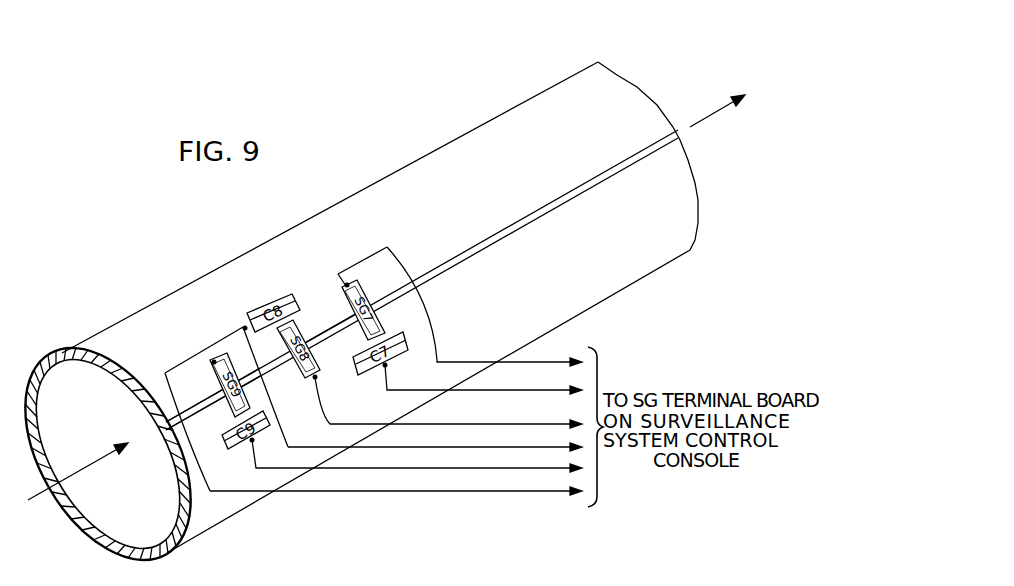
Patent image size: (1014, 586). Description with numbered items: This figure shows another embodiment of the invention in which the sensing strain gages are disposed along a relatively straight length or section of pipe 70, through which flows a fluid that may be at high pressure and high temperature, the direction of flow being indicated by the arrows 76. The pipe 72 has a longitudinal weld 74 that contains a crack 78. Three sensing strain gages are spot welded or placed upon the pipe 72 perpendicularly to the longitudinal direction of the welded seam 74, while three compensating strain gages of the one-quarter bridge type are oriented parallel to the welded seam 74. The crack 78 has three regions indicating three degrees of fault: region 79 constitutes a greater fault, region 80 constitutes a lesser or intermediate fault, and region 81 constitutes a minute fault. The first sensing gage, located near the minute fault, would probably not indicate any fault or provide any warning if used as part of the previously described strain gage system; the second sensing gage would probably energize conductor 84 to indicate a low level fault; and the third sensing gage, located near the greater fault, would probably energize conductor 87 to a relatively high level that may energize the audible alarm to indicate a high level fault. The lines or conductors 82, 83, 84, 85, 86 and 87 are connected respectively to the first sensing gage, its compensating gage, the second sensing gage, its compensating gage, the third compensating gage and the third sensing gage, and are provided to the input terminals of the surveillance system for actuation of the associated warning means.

The pipe 70 is at (408, 133).
The pipe 72 is at (130, 318).
The longitudinal weld 74 is at (539, 213).
The arrows 76 is at (702, 119).
The crack 78 is at (243, 340).
The region 79 is at (195, 404).
The region 80 is at (264, 379).
The region 81 is at (333, 330).
The conductor 82 is at (522, 362).
The conductor 83 is at (522, 390).
The conductor 84 is at (522, 424).
The conductor 85 is at (522, 447).
The conductor 86 is at (522, 468).
The conductor 87 is at (522, 491).